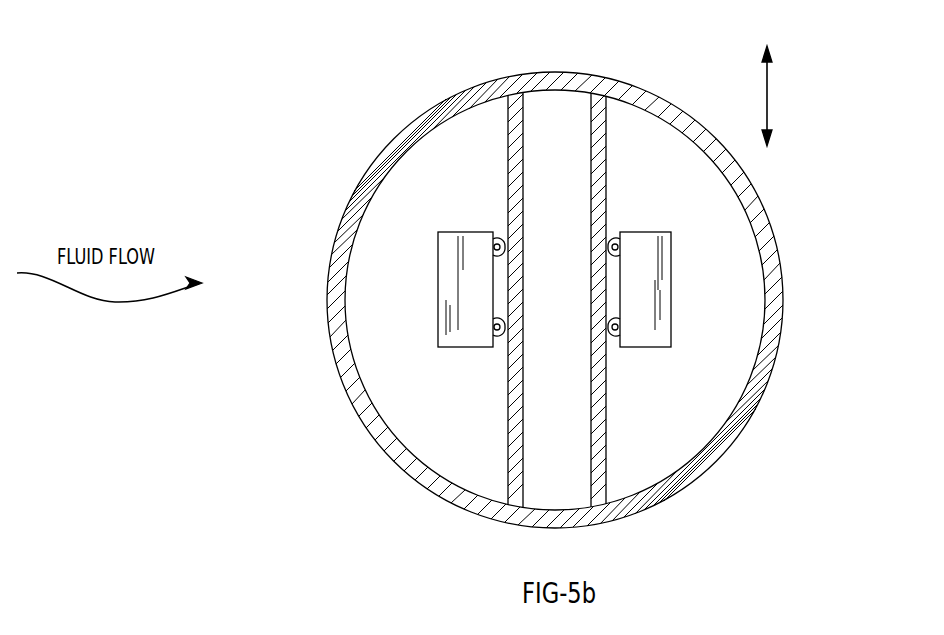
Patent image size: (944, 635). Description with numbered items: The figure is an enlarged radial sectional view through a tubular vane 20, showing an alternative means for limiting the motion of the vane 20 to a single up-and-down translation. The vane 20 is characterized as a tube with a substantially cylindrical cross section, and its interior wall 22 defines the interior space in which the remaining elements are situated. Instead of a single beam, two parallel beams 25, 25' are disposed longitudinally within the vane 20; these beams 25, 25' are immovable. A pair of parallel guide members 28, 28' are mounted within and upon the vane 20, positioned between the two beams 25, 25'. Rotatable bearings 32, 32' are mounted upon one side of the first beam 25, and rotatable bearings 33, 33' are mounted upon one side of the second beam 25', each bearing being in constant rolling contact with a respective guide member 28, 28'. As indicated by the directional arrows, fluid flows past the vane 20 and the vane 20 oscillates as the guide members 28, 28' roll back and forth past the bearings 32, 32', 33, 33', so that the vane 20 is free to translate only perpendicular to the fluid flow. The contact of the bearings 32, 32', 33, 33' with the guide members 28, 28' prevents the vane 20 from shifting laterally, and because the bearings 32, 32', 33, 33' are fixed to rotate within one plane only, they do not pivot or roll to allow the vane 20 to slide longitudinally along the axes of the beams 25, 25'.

The vane 20 is at (408, 123).
The interior wall 22 is at (400, 443).
The beam 25 is at (376, 279).
The beam 25' is at (745, 289).
The guide member 28 is at (633, 266).
The guide member 28' is at (461, 274).
The rotatable bearing 32 is at (381, 199).
The rotatable bearing 32' is at (376, 366).
The rotatable bearing 33 is at (726, 216).
The rotatable bearing 33' is at (704, 414).